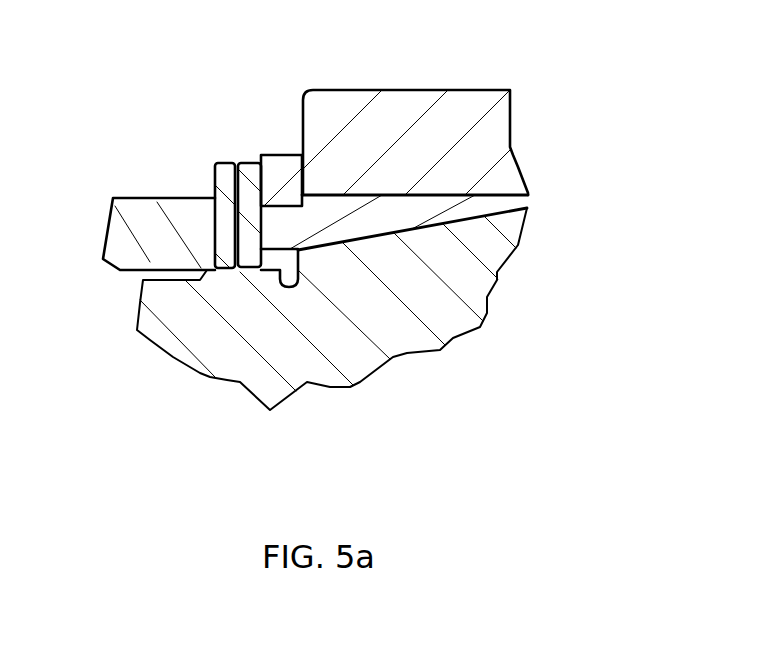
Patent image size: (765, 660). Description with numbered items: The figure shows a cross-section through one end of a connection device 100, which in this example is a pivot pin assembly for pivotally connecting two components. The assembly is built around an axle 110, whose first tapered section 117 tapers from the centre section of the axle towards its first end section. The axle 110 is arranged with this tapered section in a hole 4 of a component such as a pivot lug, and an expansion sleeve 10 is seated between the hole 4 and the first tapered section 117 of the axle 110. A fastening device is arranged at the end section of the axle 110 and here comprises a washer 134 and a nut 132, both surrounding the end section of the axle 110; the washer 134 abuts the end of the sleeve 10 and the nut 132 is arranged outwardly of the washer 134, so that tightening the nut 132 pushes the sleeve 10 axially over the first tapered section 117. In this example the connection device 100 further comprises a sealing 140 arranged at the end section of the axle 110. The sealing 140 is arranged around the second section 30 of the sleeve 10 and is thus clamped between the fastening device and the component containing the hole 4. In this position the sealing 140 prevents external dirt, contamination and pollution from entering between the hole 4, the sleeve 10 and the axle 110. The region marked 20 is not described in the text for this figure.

The connection device 100 is at (150, 93).
The expansion sleeve 10 is at (340, 208).
The hole 4 is at (388, 184).
The second component 20 is at (337, 230).
The sealing 140 is at (282, 154).
The washer 134 is at (236, 163).
The nut 132 is at (125, 199).
The second section 30 is at (278, 251).
The axle 110 is at (362, 380).
The first tapered section 117 is at (425, 293).